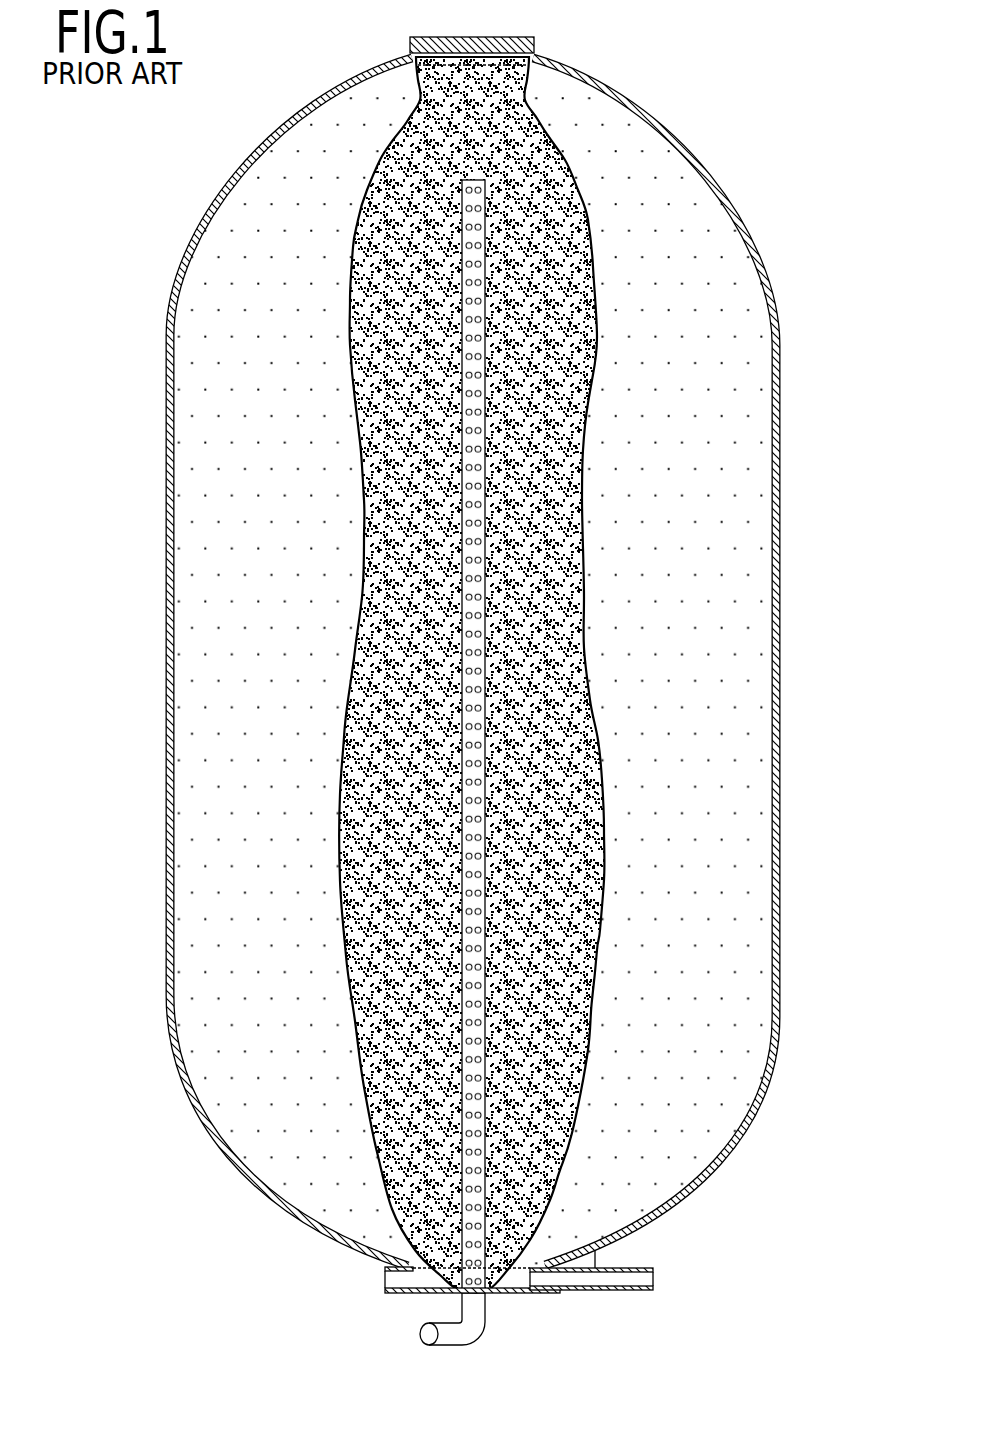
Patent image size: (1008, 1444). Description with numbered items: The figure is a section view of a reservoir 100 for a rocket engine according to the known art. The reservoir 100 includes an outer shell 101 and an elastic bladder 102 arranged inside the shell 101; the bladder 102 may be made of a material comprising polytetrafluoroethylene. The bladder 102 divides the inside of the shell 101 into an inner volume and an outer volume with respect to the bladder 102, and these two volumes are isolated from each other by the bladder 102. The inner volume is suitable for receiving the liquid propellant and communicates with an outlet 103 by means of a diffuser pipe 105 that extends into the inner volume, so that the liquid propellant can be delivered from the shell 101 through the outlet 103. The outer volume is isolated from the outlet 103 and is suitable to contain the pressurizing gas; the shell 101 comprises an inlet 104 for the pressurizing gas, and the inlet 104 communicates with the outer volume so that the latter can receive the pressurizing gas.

The reservoir 100 is at (461, 695).
The outer shell 101 is at (165, 397).
The elastic bladder 102 is at (593, 377).
The outlet 103 is at (486, 1298).
The inlet 104 is at (653, 1281).
The diffuser pipe 105 is at (470, 742).